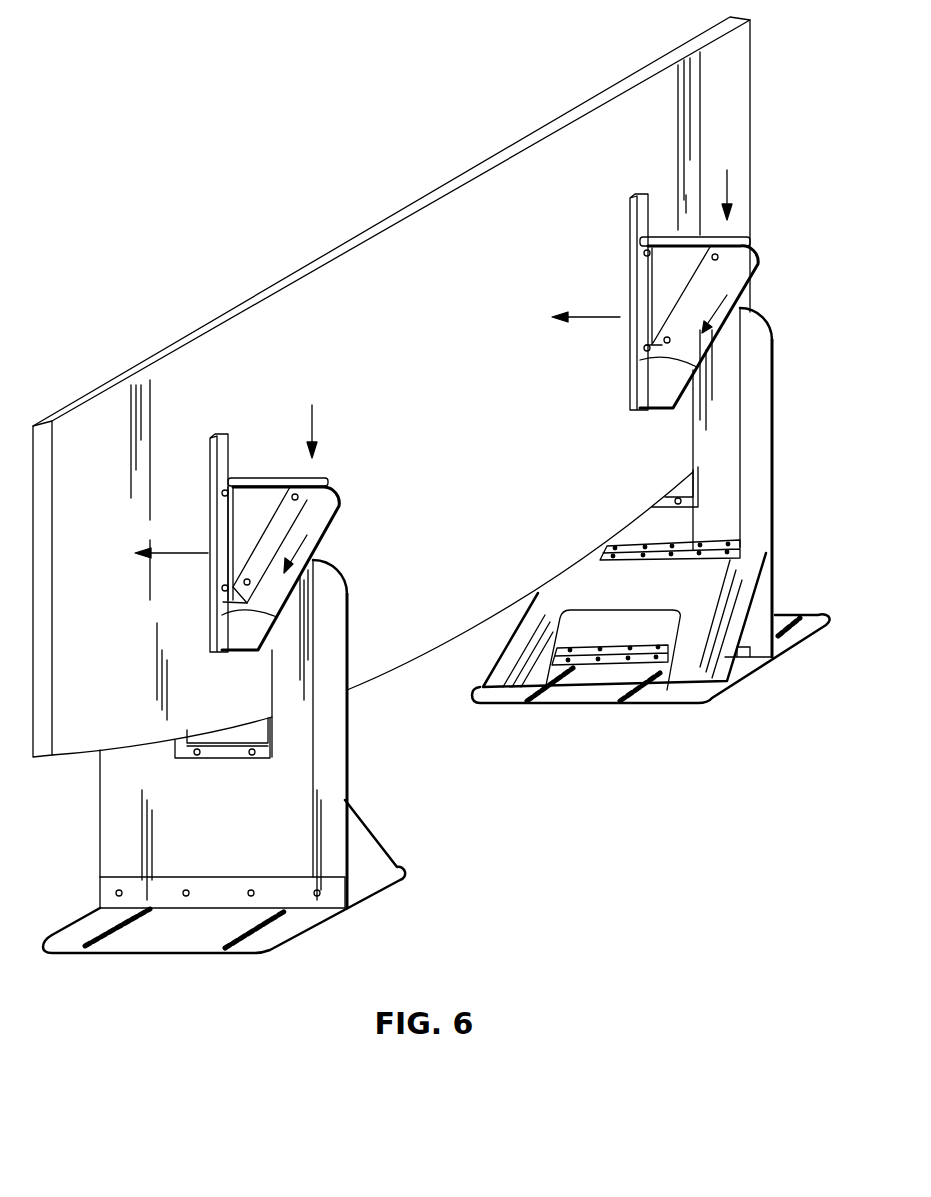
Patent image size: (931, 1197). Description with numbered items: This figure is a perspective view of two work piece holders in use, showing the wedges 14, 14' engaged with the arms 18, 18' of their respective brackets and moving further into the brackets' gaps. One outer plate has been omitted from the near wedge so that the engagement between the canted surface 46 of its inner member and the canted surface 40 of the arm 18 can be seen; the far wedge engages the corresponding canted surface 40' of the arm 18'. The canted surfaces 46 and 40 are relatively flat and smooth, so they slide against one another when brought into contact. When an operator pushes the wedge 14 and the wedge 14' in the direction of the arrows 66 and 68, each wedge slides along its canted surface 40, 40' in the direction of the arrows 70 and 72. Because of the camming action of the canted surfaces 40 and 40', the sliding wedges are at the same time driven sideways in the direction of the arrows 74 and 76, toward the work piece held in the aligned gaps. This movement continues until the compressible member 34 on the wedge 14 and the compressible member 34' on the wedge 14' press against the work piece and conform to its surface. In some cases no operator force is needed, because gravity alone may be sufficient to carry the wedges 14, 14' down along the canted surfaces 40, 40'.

The wedge 14 is at (303, 465).
The wedge 14' is at (719, 225).
The arm 18 is at (224, 756).
The arm 18' is at (651, 505).
The compressible member 34 is at (206, 512).
The compressible member 34' is at (621, 272).
The canted surface 40 is at (224, 615).
The canted surface 40' is at (667, 327).
The canted surface 46 is at (307, 507).
The arrow 66 is at (312, 428).
The arrow 68 is at (722, 195).
The arrow 70 is at (308, 545).
The arrow 72 is at (725, 300).
The arrow 74 is at (170, 553).
The arrow 76 is at (585, 317).